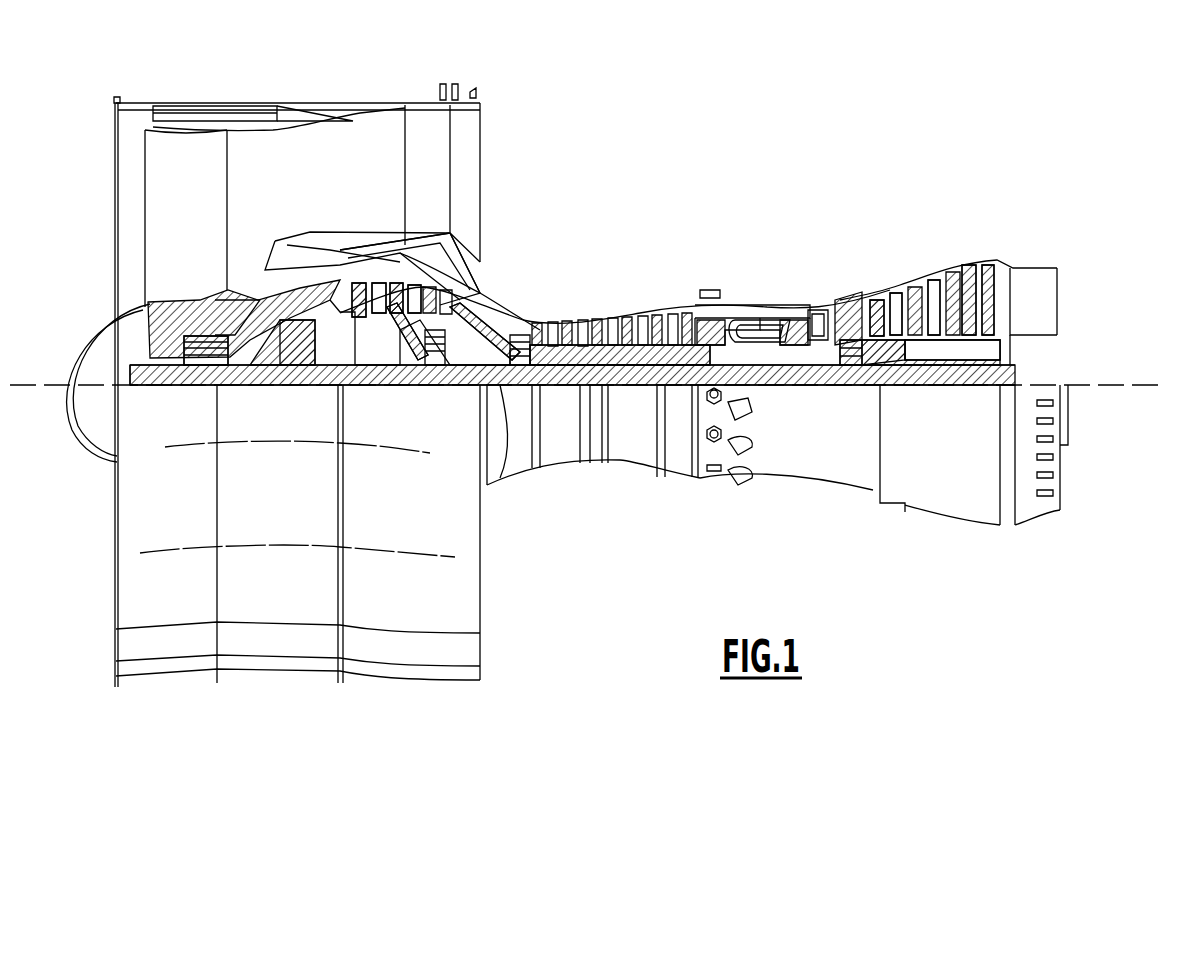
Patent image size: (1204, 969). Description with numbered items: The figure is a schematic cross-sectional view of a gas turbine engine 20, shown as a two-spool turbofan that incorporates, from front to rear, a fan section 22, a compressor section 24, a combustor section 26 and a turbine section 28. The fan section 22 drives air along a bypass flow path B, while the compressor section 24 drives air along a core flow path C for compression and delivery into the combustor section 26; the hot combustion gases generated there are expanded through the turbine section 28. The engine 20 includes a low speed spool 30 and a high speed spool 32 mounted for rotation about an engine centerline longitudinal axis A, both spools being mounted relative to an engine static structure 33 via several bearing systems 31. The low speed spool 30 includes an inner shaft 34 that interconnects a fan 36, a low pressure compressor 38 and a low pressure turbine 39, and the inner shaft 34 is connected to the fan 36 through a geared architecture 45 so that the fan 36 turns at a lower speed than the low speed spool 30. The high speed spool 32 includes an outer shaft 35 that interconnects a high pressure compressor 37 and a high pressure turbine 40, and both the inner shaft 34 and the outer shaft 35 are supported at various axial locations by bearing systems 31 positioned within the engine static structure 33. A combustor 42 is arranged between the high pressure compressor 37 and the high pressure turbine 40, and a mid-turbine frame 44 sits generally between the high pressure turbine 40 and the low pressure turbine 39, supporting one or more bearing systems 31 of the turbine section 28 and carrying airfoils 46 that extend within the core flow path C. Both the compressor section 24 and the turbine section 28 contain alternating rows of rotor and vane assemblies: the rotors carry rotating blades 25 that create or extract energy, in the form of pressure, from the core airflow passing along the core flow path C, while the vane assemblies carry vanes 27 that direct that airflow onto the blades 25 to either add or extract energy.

The gas turbine engine 20 is at (755, 155).
The fan section 22 is at (230, 95).
The compressor section 24 is at (530, 295).
The blades 25 is at (380, 300).
The combustor section 26 is at (752, 285).
The vanes 27 is at (405, 300).
The turbine section 28 is at (900, 245).
The low speed spool 30 is at (632, 393).
The bearing systems 31 is at (215, 388).
The high speed spool 32 is at (675, 345).
The engine static structure 33 is at (676, 480).
The inner shaft 34 is at (502, 440).
The outer shaft 35 is at (770, 388).
The fan 36 is at (202, 232).
The high pressure compressor 37 is at (605, 350).
The low pressure compressor 38 is at (432, 256).
The low pressure turbine 39 is at (950, 280).
The high pressure turbine 40 is at (818, 310).
The combustor 42 is at (750, 330).
The mid-turbine frame 44 is at (860, 297).
The geared architecture 45 is at (300, 370).
The airfoils 46 is at (890, 345).
The engine centerline longitudinal axis A is at (1152, 385).
The bypass flow path B is at (262, 182).
The core flow path C is at (455, 300).